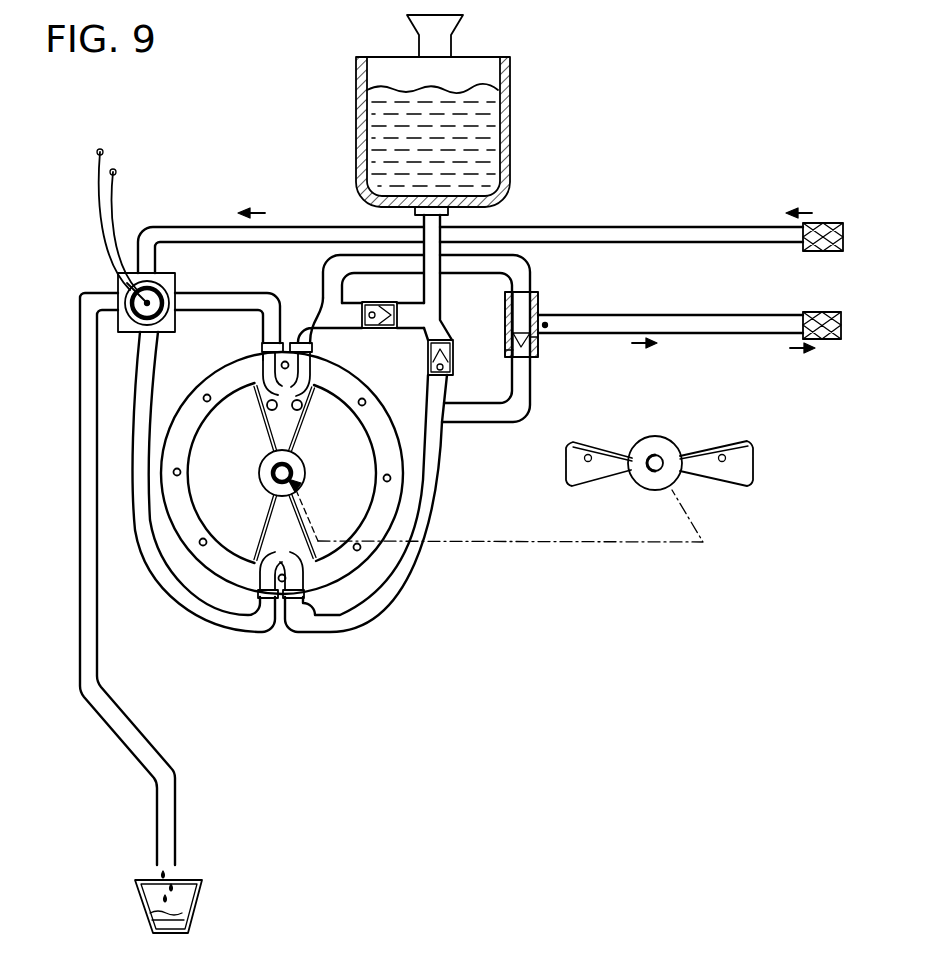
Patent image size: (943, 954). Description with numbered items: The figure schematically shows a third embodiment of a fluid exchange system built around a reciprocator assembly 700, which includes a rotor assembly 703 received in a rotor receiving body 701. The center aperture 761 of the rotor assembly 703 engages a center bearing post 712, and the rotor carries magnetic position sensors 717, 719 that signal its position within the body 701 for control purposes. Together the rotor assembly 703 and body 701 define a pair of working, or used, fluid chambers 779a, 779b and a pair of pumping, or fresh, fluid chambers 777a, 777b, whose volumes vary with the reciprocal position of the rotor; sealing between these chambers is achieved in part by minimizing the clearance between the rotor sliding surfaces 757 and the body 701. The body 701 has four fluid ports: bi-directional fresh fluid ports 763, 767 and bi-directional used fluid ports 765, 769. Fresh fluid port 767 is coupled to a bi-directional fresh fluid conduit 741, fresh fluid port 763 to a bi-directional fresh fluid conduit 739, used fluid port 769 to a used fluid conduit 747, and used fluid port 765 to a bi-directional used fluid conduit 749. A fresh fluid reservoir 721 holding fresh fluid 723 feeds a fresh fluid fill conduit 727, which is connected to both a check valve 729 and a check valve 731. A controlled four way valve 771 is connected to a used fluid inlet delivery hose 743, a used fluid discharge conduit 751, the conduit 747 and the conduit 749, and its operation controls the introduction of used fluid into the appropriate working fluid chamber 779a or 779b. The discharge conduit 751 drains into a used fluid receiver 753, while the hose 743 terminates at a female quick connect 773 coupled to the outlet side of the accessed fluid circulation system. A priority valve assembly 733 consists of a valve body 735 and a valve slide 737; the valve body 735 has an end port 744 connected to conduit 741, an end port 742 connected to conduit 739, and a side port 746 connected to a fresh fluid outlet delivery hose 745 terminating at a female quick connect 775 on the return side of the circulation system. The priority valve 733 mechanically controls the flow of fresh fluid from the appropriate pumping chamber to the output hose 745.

The reciprocator assembly 700 is at (415, 502).
The rotor receiving body 701 is at (383, 513).
The rotor assembly 703 is at (766, 476).
The center bearing post 712 is at (290, 474).
The magnetic position sensor 717 is at (302, 408).
The magnetic position sensor 719 is at (267, 408).
The fresh fluid reservoir 721 is at (510, 156).
The fresh fluid 723 is at (478, 112).
The fresh fluid fill conduit 727 is at (428, 303).
The check valve 729 is at (386, 328).
The check valve 731 is at (453, 364).
The priority valve assembly 733 is at (548, 300).
The valve body 735 is at (521, 348).
The valve slide 737 is at (538, 340).
The bi-directional fresh fluid conduit 739 is at (478, 423).
The bi-directional fresh fluid conduit 741 is at (300, 342).
The end port 742 is at (505, 348).
The used fluid inlet delivery hose 743 is at (652, 227).
The end port 744 is at (522, 256).
The fresh fluid outlet delivery hose 745 is at (713, 334).
The side port 746 is at (547, 325).
The used fluid conduit 747 is at (214, 311).
The bi-directional used fluid conduit 749 is at (133, 407).
The used fluid discharge conduit 751 is at (128, 655).
The used fluid receiver 753 is at (197, 923).
The rotor sliding surface 757 is at (566, 468).
The center aperture 761 is at (660, 455).
The bi-directional fresh fluid port 763 is at (300, 575).
The bi-directional used fluid port 765 is at (263, 578).
The bi-directional fresh fluid port 767 is at (276, 343).
The bi-directional used fluid port 769 is at (268, 372).
The controlled four way valve 771 is at (137, 283).
The female quick connect 773 is at (829, 251).
The female quick connect 775 is at (829, 339).
The pumping fluid chamber 777a is at (330, 404).
The pumping fluid chamber 777b is at (330, 558).
The working fluid chamber 779a is at (230, 412).
The working fluid chamber 779b is at (232, 510).